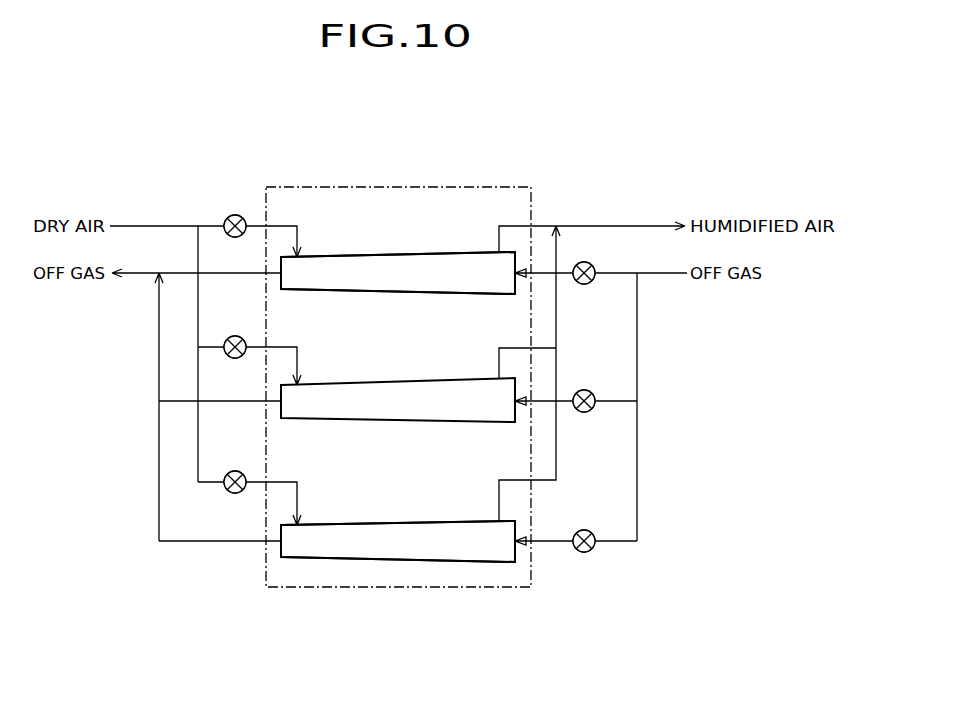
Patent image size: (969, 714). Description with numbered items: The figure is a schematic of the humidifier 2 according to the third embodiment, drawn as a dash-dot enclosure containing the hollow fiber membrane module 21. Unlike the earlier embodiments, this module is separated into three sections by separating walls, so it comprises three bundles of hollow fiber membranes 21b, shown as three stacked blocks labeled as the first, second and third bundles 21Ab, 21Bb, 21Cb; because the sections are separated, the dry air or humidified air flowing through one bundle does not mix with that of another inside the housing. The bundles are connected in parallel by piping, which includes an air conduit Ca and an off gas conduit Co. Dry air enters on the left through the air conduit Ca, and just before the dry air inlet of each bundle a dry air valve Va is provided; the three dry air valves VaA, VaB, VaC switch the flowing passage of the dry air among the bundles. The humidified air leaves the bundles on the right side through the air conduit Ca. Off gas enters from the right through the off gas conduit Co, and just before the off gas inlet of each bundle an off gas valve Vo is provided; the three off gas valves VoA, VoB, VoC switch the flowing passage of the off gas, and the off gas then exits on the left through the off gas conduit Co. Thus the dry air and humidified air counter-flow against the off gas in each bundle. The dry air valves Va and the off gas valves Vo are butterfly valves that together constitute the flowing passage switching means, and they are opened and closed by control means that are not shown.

The humidifier 2 is at (509, 163).
The hollow fiber membrane module 21 is at (325, 587).
The bundles of hollow fiber membranes 21b is at (342, 257).
The bundle of hollow fiber membranes 21Ab is at (398, 273).
The bundle of hollow fiber membranes 21Bb is at (342, 385).
The bundle of hollow fiber membranes 21Cb is at (342, 525).
The air conduit Ca is at (192, 223).
The off gas conduit Co is at (143, 283).
The dry air valves Va is at (235, 214).
The dry air valve VaA is at (231, 197).
The dry air valve VaB is at (231, 320).
The dry air valve VaC is at (229, 453).
The off gas valves Vo is at (584, 285).
The off gas valve VoA is at (583, 312).
The off gas valve VoB is at (582, 440).
The off gas valve VoC is at (582, 581).